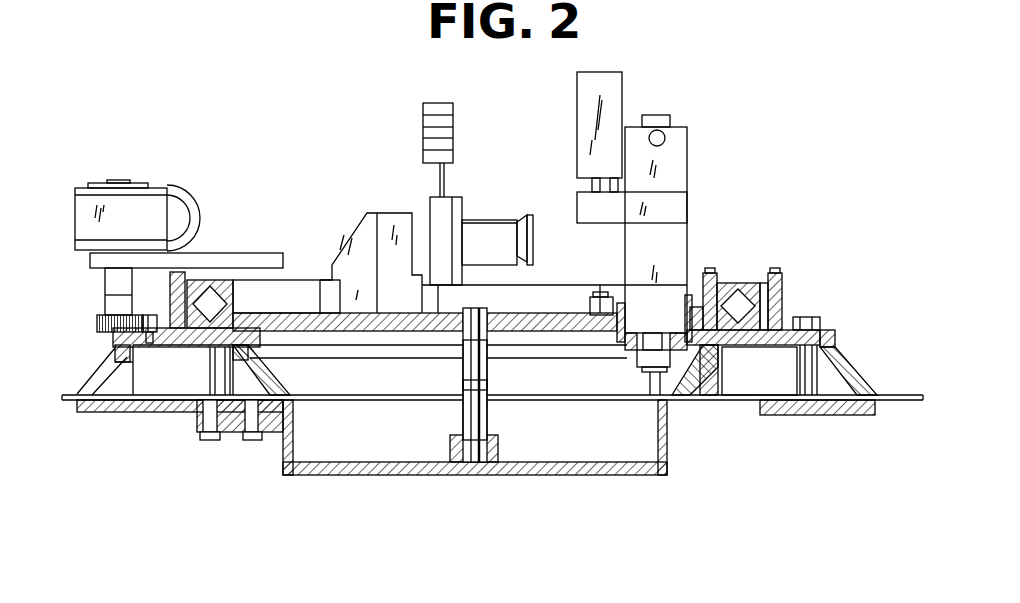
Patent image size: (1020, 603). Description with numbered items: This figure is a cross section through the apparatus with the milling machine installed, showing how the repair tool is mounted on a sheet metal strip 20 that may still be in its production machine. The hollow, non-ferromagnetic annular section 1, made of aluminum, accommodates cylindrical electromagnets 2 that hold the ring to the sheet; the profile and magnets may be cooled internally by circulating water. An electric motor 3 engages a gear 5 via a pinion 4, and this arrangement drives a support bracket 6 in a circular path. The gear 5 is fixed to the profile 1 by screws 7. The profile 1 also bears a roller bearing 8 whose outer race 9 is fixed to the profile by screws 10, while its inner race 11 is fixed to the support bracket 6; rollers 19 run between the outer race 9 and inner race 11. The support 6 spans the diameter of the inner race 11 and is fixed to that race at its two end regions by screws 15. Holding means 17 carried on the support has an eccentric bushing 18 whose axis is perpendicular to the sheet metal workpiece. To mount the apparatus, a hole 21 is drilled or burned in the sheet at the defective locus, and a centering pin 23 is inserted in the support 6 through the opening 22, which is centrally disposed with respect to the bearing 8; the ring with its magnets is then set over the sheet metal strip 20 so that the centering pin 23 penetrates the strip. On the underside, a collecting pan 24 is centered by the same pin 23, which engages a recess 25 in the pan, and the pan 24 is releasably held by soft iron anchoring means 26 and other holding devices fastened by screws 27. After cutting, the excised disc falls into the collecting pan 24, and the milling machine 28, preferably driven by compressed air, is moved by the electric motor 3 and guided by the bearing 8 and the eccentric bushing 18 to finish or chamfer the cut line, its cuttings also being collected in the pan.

The annular section 1 is at (850, 376).
The electromagnet 2 is at (753, 384).
The electric motor 3 is at (173, 182).
The pinion 4 is at (103, 324).
The gear 5 is at (147, 316).
The support bracket 6 is at (553, 298).
The screws 7 is at (823, 330).
The bearing 8 is at (775, 252).
The outer race 9 is at (780, 287).
The screws 10 is at (782, 273).
The inner race 11 is at (733, 273).
The screws 15 is at (715, 272).
The holding means 17 is at (605, 296).
The eccentric bushing 18 is at (617, 343).
The rollers 19 is at (230, 280).
The sheet metal strip 20 is at (900, 400).
The hole 21 is at (487, 388).
The opening 22 is at (480, 307).
The centering pin 23 is at (468, 376).
The collecting pan 24 is at (600, 476).
The recess 25 is at (498, 446).
The soft iron anchoring means 26 is at (817, 416).
The screws 27 is at (250, 441).
The milling machine 28 is at (690, 118).